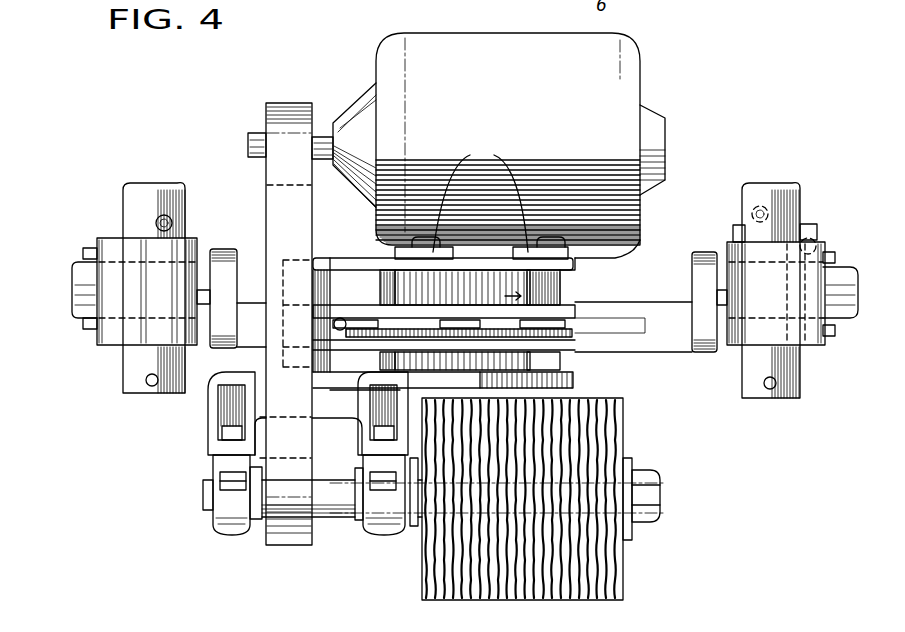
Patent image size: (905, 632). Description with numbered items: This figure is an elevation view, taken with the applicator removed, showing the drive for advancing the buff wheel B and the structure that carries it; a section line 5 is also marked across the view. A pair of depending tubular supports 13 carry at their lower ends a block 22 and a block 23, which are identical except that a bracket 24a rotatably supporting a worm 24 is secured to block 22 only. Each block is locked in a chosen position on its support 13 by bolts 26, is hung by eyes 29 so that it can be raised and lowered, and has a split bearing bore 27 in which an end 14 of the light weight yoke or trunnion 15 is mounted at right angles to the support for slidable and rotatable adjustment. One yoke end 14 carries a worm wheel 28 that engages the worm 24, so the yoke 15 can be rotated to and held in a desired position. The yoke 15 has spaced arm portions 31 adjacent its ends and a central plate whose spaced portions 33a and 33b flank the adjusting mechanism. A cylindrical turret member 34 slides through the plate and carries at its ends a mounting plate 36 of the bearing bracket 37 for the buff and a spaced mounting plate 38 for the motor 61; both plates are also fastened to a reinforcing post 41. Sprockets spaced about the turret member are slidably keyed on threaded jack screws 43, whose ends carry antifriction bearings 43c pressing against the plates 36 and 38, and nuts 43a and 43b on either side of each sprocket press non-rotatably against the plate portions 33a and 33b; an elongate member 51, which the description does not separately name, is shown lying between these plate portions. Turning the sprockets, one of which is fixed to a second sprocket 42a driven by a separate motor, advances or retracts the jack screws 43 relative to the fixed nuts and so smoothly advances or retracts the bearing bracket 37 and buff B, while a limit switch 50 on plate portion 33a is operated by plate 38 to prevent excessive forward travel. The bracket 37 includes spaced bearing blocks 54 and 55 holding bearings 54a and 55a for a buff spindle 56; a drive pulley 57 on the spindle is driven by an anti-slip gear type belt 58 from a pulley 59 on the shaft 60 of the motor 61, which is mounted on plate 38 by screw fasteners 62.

The section line 5- 5 is at (185, 167).
The depending tubular support 13 is at (130, 385).
The yoke end 14 is at (200, 258).
The yoke or trunnion 15 is at (684, 365).
The block 22 is at (760, 332).
The block 23 is at (128, 333).
The worm 24 is at (810, 232).
The bracket 24a is at (733, 235).
The bolts 26 is at (87, 327).
The split bearing bore 27 is at (113, 263).
The worm wheel 28 is at (790, 285).
The eyes 29 is at (156, 220).
The arm portion 31 is at (222, 352).
The plate portion 33a is at (578, 300).
The plate portion 33b is at (580, 352).
The cylindrical turret member 34 is at (564, 280).
The mounting plate 36 is at (574, 380).
The bearing bracket 37 is at (333, 407).
The mounting plate 38 is at (347, 267).
The reinforcing post 41 is at (300, 275).
The second sprocket 42a is at (378, 308).
The threaded jack screw 43 is at (383, 278).
The nut 43a is at (575, 317).
The nut 43b is at (390, 348).
The antifriction bearing 43c is at (387, 270).
The limit switch 50 is at (636, 257).
The rack 51 is at (460, 337).
The bearing block 54 is at (217, 525).
The bearing 54a is at (252, 533).
The bearing block 55 is at (381, 538).
The bearing 55a is at (357, 527).
The buff spindle 56 is at (343, 513).
The drive pulley 57 is at (301, 448).
The anti-slip gear type belt 58 is at (276, 197).
The pulley 59 is at (297, 186).
The motor shaft 60 is at (248, 145).
The motor 61 is at (527, 116).
The screw fasteners 62 is at (480, 197).
The buff wheel B is at (637, 582).